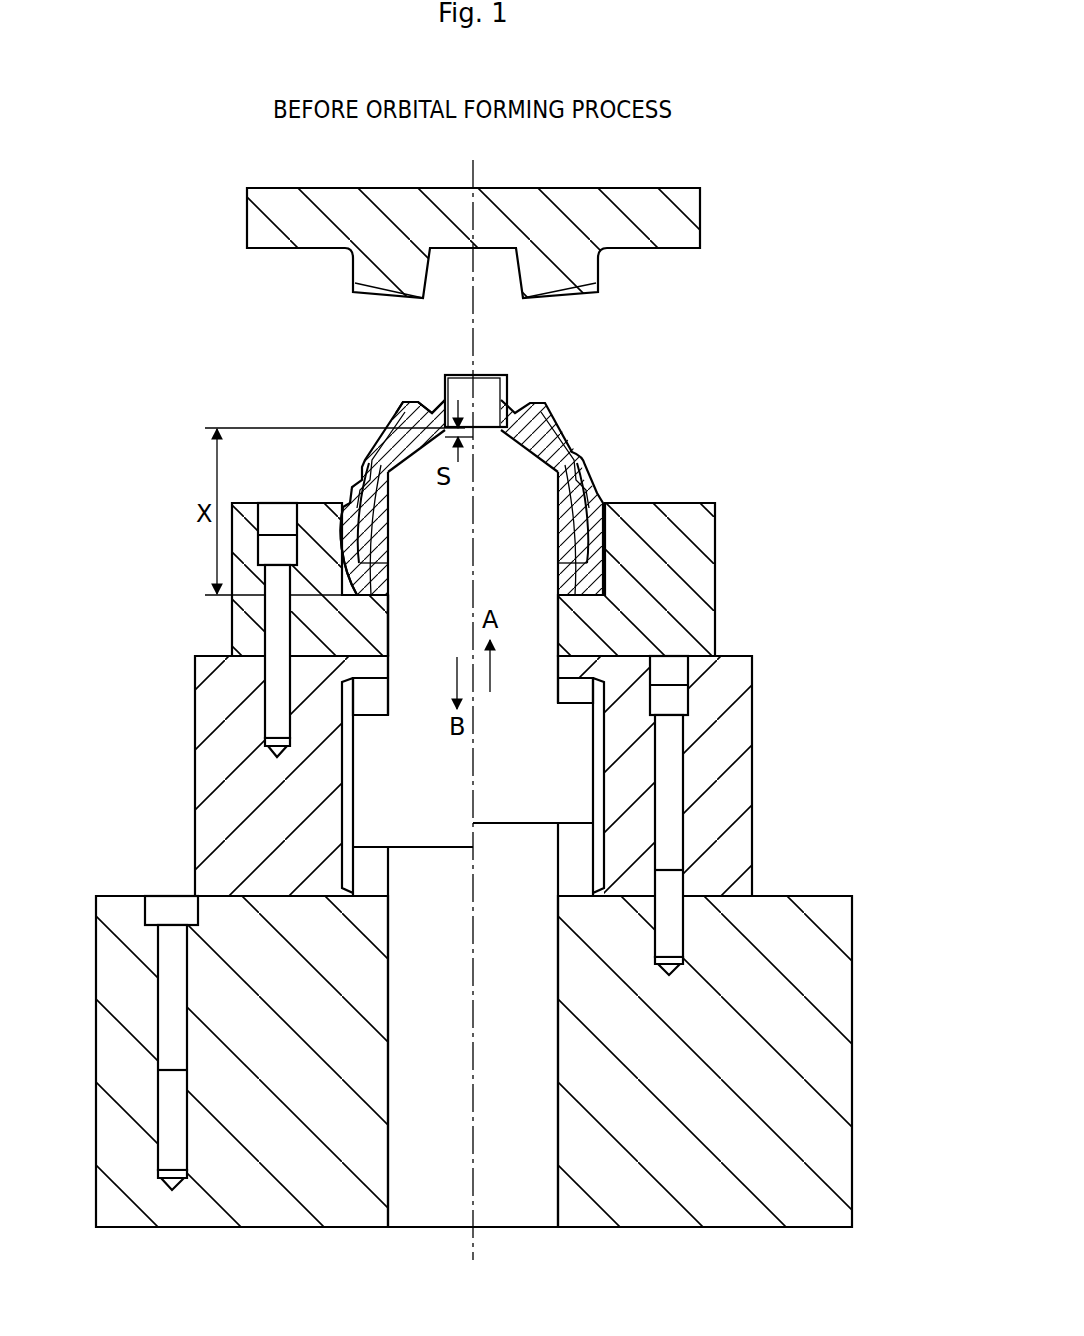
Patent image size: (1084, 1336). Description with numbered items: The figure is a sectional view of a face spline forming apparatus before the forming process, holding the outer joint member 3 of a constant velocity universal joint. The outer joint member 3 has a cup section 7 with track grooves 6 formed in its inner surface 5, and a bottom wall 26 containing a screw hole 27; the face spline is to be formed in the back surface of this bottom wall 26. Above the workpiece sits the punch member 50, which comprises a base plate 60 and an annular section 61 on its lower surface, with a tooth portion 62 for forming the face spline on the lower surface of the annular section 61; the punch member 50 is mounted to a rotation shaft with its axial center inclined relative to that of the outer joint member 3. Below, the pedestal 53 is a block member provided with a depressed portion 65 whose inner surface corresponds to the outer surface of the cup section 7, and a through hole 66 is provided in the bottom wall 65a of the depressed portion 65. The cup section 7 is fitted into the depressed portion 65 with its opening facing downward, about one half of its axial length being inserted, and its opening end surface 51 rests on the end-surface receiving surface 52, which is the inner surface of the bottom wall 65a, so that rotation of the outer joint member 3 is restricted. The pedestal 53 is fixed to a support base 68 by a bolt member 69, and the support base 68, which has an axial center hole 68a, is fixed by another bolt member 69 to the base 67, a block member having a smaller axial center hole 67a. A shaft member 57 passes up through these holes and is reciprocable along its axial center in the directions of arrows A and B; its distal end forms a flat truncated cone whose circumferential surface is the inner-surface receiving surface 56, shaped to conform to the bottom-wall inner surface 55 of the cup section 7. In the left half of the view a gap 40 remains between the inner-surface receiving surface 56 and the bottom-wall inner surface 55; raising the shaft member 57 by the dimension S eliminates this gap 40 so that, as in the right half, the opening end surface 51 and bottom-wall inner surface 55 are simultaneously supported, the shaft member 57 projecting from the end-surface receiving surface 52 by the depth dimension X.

The outer joint member 3 is at (498, 608).
The inner surface 5 is at (572, 540).
The track grooves 6 is at (365, 548).
The cup section 7 is at (605, 496).
The bottom wall 26 is at (430, 402).
The screw hole 27 is at (463, 375).
The gap 40 is at (470, 430).
The punch member 50 is at (517, 231).
The opening end surface 51 is at (265, 628).
The end-surface receiving surface 52 is at (372, 586).
The pedestal 53 is at (684, 502).
The bottom-wall inner surface 55 is at (515, 447).
The inner-surface receiving surface 56 is at (408, 452).
The shaft member 57 is at (532, 640).
The base plate 60 is at (627, 202).
The annular section 61 is at (582, 270).
The tooth portion 62 is at (380, 296).
The depressed portion 65 is at (357, 520).
The bottom wall 65a is at (382, 634).
The through hole 66 is at (388, 626).
The base 67 is at (505, 1089).
The axial center hole 67a is at (392, 1177).
The support base 68 is at (469, 776).
The axial center hole 68a is at (350, 858).
The bolt member 69 is at (270, 713).